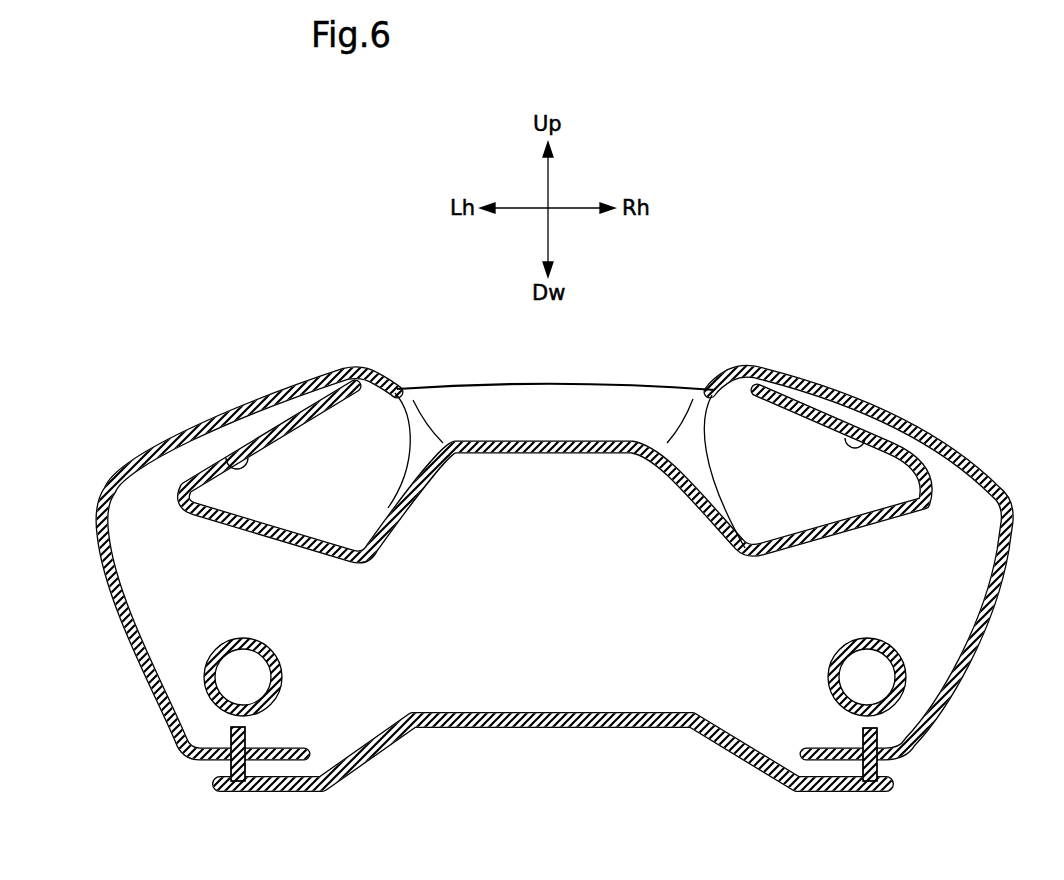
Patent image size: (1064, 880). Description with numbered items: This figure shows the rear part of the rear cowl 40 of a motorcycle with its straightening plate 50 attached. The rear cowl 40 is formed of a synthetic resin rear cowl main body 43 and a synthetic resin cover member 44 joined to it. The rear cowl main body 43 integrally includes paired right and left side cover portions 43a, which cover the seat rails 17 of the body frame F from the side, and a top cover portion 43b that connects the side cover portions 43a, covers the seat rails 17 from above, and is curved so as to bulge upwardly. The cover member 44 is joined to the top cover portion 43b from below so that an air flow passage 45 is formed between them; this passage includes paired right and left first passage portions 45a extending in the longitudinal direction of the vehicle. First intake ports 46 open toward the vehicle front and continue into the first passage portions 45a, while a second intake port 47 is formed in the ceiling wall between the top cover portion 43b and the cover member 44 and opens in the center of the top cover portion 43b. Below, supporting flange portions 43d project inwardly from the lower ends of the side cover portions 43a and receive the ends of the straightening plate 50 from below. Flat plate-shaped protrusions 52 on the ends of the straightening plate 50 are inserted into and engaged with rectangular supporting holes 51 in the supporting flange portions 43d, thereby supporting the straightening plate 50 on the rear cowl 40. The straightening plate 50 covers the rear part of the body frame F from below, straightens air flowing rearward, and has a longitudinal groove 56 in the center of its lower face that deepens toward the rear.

The rear cowl 40 is at (410, 263).
The rear cowl main body 43 is at (284, 364).
The cover member 44 is at (470, 387).
The side cover portions 43a is at (108, 584).
The top cover portion 43b is at (813, 383).
The supporting flange portions 43d is at (278, 754).
The air flow passage 45 is at (803, 524).
The first passage portions 45a is at (369, 472).
The first intake ports 46 is at (228, 456).
The second intake port 47 is at (712, 392).
The seat rails 17 is at (282, 662).
The straightening plate 50 is at (578, 712).
The supporting holes 51 is at (238, 782).
The protrusions 52 is at (248, 738).
The groove 56 is at (447, 728).
The body frame F is at (915, 694).